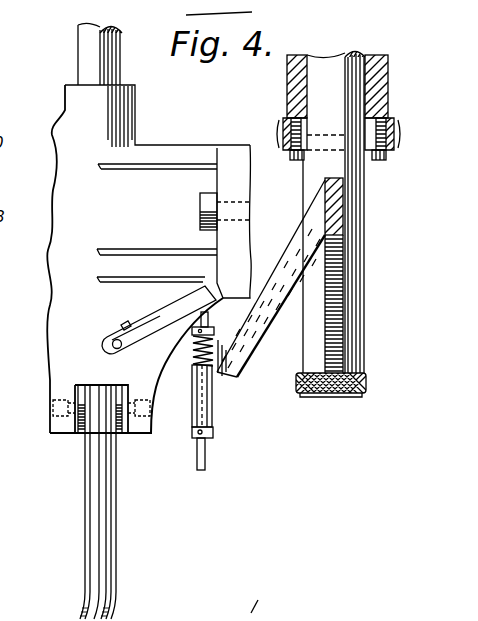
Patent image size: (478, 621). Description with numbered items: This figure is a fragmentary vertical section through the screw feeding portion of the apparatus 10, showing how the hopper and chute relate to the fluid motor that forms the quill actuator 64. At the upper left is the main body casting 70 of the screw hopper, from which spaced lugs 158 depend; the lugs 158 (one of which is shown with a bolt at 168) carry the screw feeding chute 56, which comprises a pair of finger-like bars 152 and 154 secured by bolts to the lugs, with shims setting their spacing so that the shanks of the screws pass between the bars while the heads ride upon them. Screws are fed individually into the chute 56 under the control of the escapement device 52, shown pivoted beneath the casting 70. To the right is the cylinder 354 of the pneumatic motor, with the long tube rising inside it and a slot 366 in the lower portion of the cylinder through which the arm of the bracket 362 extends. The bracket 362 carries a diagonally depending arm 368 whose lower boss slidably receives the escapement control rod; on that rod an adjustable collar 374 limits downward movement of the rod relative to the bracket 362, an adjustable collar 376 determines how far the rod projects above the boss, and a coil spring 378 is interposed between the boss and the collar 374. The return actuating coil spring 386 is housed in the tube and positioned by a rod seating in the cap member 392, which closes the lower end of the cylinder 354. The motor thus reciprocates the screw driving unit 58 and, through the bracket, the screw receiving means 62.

The main body casting 70 is at (178, 150).
The escapement device 52 is at (130, 310).
The bracket 362 is at (294, 225).
The cylinder 354 is at (310, 314).
The slot 366 is at (340, 290).
The return actuating coil spring 386 is at (338, 246).
The cap member 392 is at (296, 393).
The quill actuator 64 is at (348, 408).
The adjustable collar 374 is at (193, 333).
The diagonally depending arm 368 is at (241, 368).
The adjustable collar 376 is at (213, 432).
The coil spring 378 is at (205, 458).
The lugs 158 is at (58, 427).
The clamp bolt 168 is at (133, 427).
The screw feeding chute 56 is at (105, 502).
The finger-like bar 152 is at (85, 573).
The finger-like bar 154 is at (120, 578).
The apparatus 10 is at (26, 389).
The screw driving unit 58 is at (0, 490).
The screw receiving means 62 is at (9, 540).